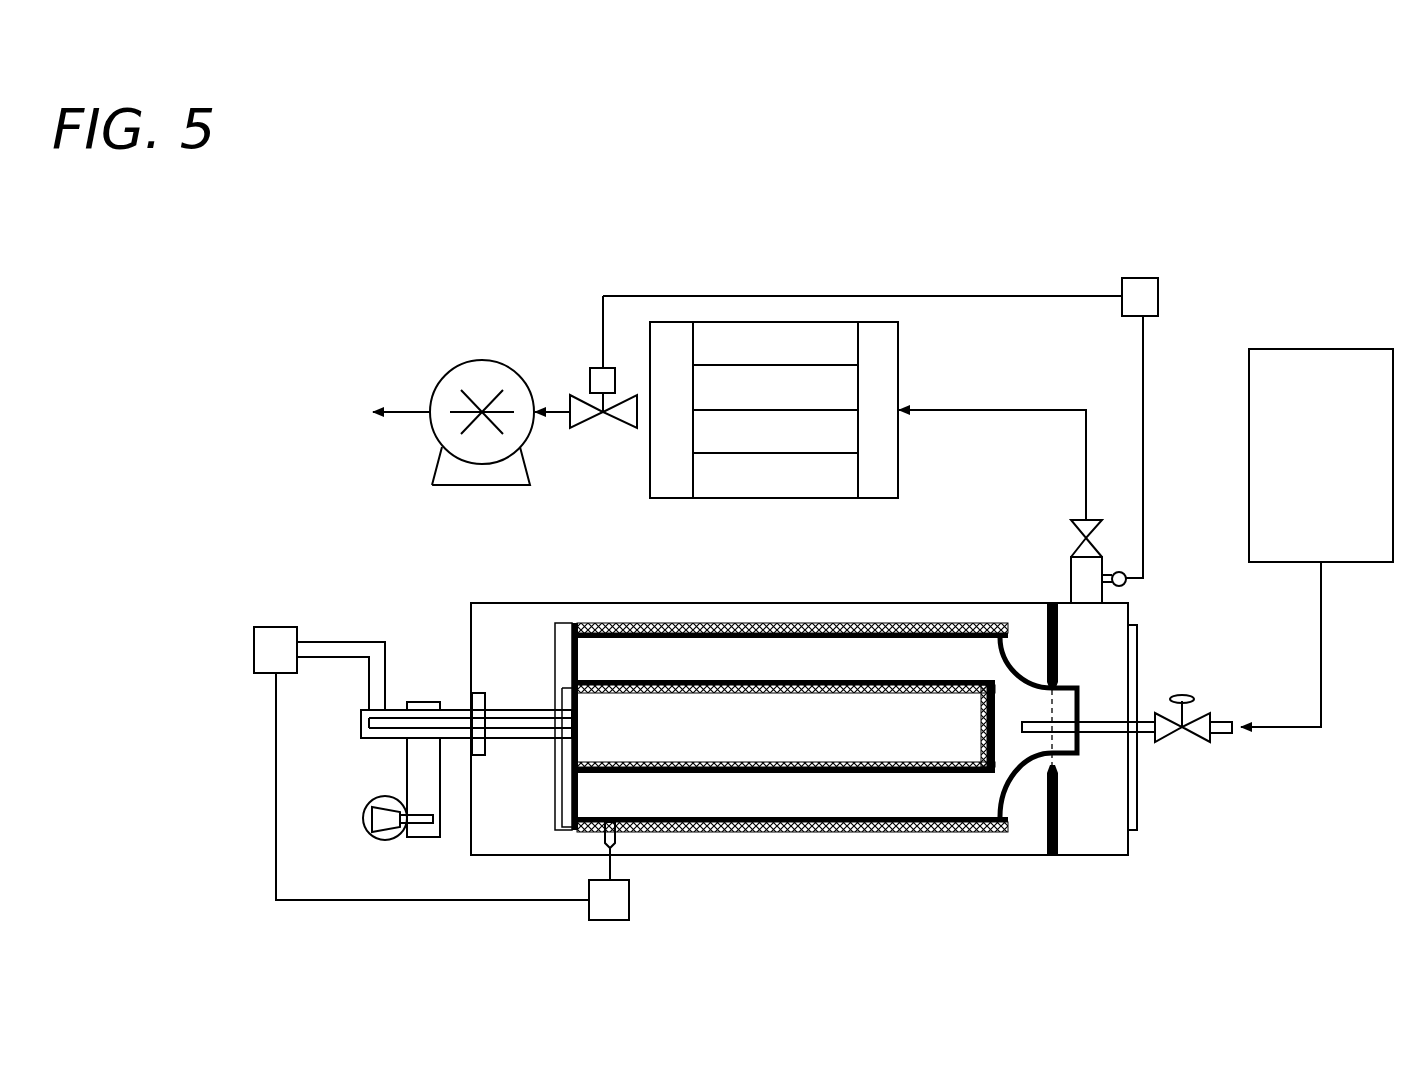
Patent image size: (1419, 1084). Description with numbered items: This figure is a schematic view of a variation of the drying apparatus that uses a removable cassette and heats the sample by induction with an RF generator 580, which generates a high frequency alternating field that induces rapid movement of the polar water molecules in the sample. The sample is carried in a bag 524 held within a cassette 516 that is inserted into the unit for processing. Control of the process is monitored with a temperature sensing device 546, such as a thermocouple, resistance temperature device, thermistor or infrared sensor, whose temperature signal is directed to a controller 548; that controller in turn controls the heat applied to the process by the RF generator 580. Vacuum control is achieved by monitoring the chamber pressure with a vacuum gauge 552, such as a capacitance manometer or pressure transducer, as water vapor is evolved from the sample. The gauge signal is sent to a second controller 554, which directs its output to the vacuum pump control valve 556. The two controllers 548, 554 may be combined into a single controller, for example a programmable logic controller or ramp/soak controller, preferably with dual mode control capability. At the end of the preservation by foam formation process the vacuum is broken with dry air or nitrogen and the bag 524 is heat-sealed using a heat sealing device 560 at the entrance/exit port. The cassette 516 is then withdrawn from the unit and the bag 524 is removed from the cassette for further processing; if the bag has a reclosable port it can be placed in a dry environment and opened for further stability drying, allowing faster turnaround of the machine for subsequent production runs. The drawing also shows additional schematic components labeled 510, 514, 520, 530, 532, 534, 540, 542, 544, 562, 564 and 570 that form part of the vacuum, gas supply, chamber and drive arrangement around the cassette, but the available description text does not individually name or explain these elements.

The heat exchanger 510 is at (768, 322).
The housing 514 is at (1093, 855).
The cassette 516 is at (884, 838).
The pump 520 is at (468, 362).
The bag 524 is at (1027, 787).
The end plate 530 is at (1140, 768).
The inner tube 532 is at (820, 685).
The outer tube insulation 534 is at (760, 622).
The gas supply 540 is at (1383, 562).
The inlet valve 542 is at (1205, 712).
The inlet pipe 544 is at (1108, 722).
The temperature sensing device 546 is at (615, 838).
The controller 548 is at (629, 918).
The vacuum gauge 552 is at (1125, 573).
The controller 554 is at (1128, 278).
The vacuum pump control valve 556 is at (596, 368).
The heat sealing device 560 is at (1050, 603).
The seal 562 is at (478, 692).
The shaft 564 is at (512, 740).
The motor 570 is at (395, 840).
The RF generator 580 is at (278, 627).